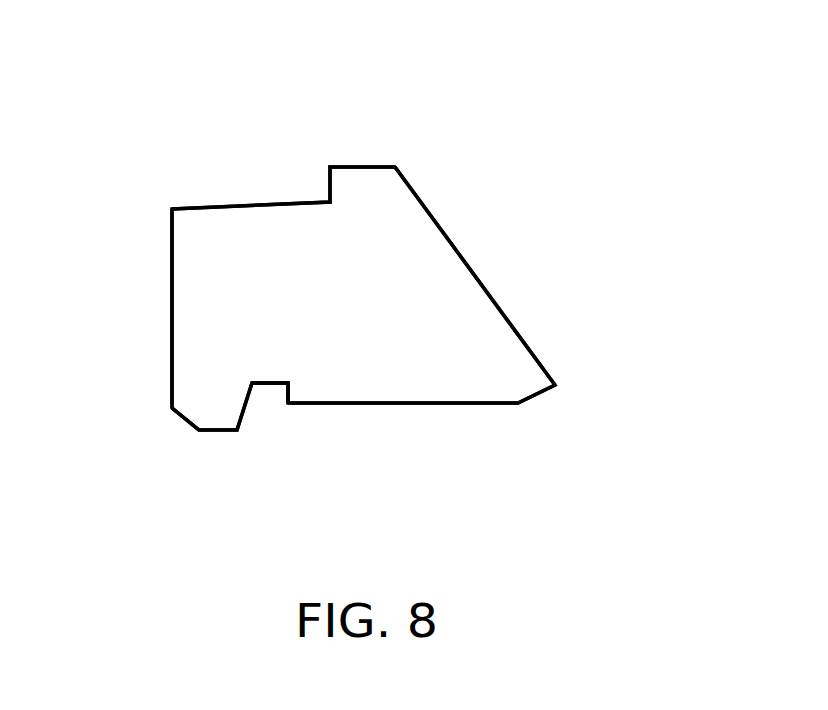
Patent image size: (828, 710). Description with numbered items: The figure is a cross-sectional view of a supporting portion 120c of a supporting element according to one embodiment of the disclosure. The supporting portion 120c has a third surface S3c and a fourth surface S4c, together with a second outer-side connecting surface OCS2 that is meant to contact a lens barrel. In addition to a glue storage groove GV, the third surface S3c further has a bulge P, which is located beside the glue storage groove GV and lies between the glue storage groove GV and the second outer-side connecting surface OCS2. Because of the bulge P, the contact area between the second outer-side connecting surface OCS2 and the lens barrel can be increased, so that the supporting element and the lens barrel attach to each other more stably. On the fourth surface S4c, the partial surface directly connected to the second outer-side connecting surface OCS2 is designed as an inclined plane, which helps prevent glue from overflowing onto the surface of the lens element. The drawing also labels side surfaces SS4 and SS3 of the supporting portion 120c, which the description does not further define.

The supporting portion 120c is at (700, 546).
The fourth surface S4c is at (280, 202).
The third surface S3c is at (333, 405).
The fourth side surface (second inclined surface ICS2) SS4 is at (467, 263).
The third side surface (second inclined surface ICS2) SS3 is at (543, 396).
The second outer-side connecting surface OCS2 is at (172, 277).
The glue storage groove GV is at (263, 393).
The bulge P is at (222, 418).